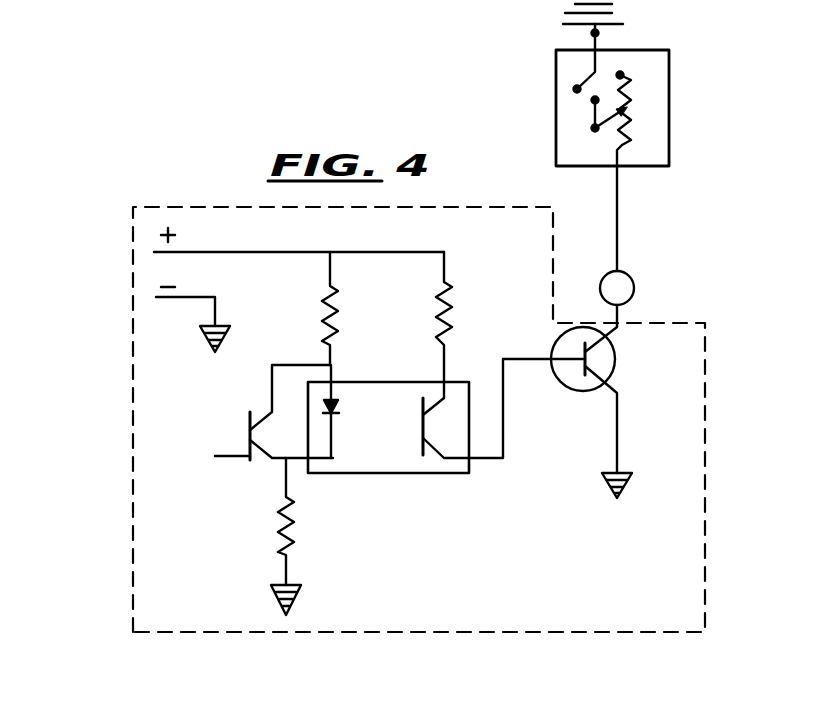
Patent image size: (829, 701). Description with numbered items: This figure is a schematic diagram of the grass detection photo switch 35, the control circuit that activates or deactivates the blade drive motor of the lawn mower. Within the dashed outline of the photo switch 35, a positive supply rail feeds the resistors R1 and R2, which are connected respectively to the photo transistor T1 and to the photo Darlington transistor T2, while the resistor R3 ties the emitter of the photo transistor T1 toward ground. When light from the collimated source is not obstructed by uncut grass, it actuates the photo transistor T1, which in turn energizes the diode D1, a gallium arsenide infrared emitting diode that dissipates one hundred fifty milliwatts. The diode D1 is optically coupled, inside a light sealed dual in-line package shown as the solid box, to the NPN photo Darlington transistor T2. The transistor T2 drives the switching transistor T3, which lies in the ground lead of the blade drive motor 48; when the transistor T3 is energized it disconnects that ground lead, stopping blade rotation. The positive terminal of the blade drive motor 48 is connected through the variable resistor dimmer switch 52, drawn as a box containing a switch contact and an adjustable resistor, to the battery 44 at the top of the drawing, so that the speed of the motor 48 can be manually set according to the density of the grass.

The grass detection photo switch 35 is at (133, 445).
The resistor R1 is at (330, 291).
The resistor R2 is at (444, 291).
The resistor R3 is at (286, 530).
The photo transistor T1 is at (215, 456).
The NPN Photo Darlington transistor T2 is at (423, 455).
The switching transistor T3 is at (581, 390).
The diode D1 is at (334, 398).
The blade drive motor 48 is at (634, 290).
The variable resistor dimmer switch 52 is at (556, 103).
The battery 44 is at (565, 15).